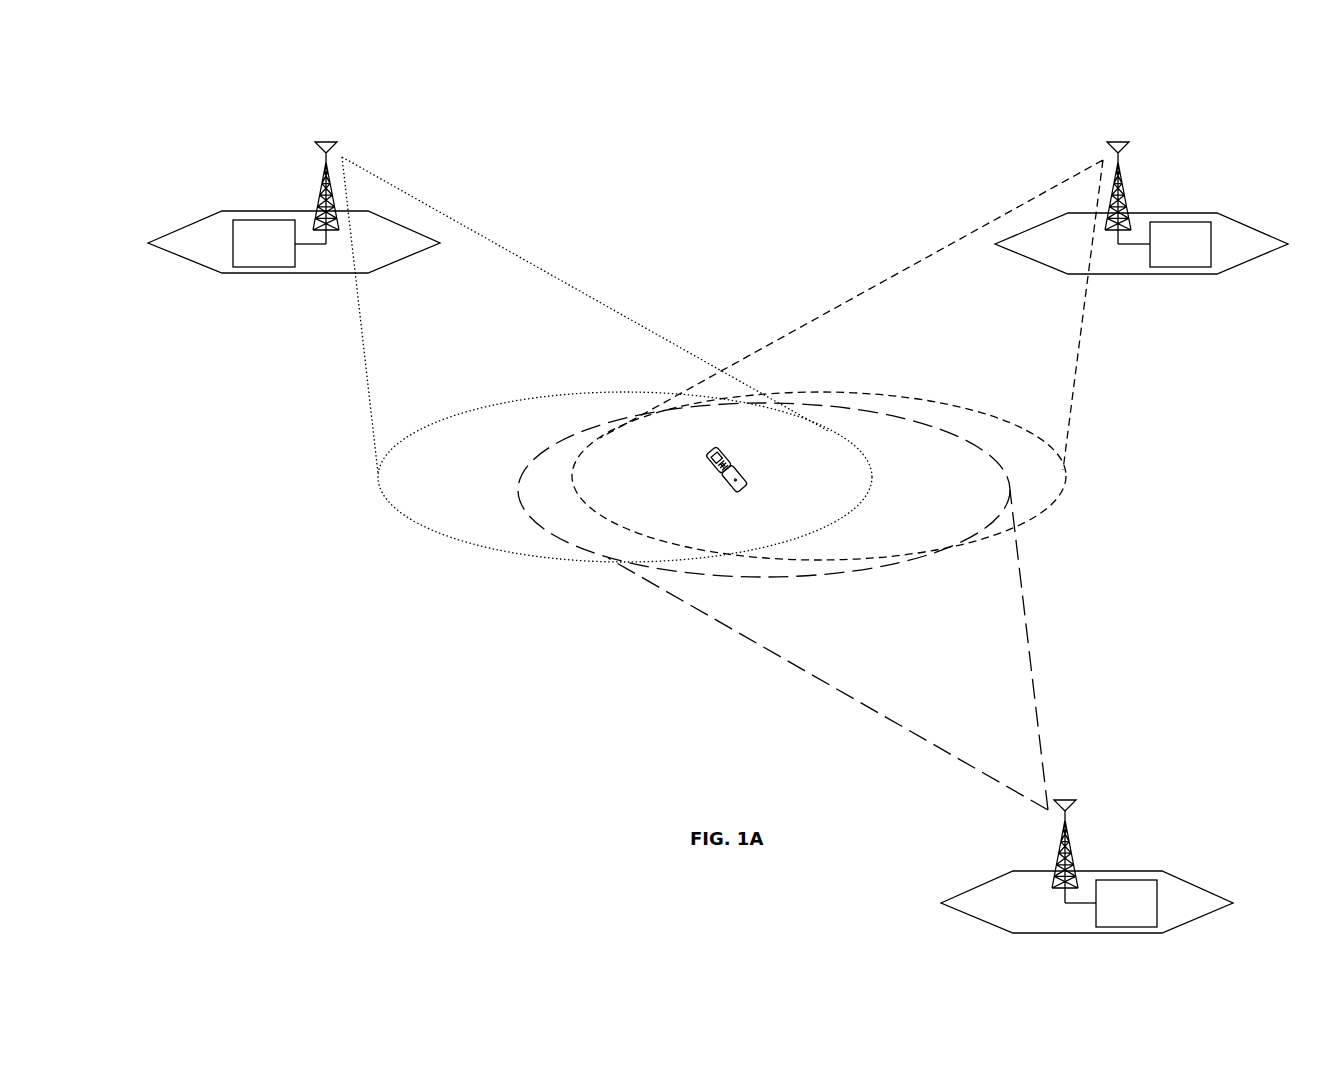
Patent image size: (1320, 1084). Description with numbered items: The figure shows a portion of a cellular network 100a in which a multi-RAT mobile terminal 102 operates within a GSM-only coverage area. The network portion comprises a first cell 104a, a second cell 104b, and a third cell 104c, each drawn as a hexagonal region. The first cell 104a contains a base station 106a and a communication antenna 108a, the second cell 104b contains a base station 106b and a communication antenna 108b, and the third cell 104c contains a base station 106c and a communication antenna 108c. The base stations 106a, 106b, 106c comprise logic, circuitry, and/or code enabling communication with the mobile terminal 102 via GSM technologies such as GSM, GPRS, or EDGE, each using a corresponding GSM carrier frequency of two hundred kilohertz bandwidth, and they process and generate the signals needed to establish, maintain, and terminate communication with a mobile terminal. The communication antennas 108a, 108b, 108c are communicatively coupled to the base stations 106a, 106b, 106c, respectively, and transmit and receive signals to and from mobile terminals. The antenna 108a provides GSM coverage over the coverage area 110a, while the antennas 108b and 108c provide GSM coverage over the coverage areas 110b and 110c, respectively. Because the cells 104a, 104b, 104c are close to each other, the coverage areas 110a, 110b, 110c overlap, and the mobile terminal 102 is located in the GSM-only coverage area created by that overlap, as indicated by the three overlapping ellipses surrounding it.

The cellular network 100a is at (706, 132).
The mobile terminal 102 is at (733, 452).
The first cell 104a is at (168, 232).
The second cell 104b is at (1240, 222).
The third cell 104c is at (1186, 880).
The base station 106a is at (262, 220).
The base station 106b is at (1179, 222).
The base station 106c is at (1124, 880).
The communication antenna 108a is at (327, 140).
The communication antenna 108b is at (1119, 140).
The communication antenna 108c is at (1064, 798).
The coverage area 110a is at (545, 393).
The coverage area 110b is at (885, 393).
The coverage area 110c is at (1011, 487).